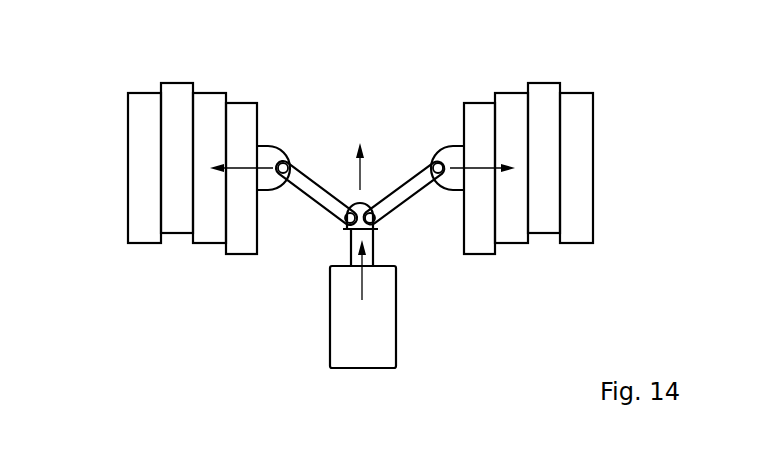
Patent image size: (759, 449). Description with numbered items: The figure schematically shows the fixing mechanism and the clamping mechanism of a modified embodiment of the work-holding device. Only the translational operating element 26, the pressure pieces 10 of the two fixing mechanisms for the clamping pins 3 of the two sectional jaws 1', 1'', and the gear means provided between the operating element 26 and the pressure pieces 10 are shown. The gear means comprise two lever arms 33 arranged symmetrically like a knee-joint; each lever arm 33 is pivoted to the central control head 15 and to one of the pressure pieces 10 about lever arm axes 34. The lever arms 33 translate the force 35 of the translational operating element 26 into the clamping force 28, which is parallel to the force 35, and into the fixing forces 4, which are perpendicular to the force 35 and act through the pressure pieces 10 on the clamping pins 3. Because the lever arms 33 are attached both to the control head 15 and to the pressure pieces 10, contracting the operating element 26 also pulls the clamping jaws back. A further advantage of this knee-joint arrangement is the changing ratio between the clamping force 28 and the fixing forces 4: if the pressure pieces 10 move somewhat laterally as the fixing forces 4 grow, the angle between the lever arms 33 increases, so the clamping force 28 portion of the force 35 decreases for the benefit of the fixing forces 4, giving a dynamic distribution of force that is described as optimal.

The sectional jaw 1' is at (157, 163).
The sectional jaw 1'' is at (573, 163).
The clamping pin 3 is at (145, 105).
The fixing force 4 is at (245, 168).
The pressure piece 10 is at (265, 153).
The control head 15 is at (378, 230).
The translational operating element 26 is at (367, 315).
The clamping force 28 is at (342, 100).
The lever arm 33 is at (313, 187).
The lever arm axis 34 is at (377, 205).
The force 35 is at (362, 283).